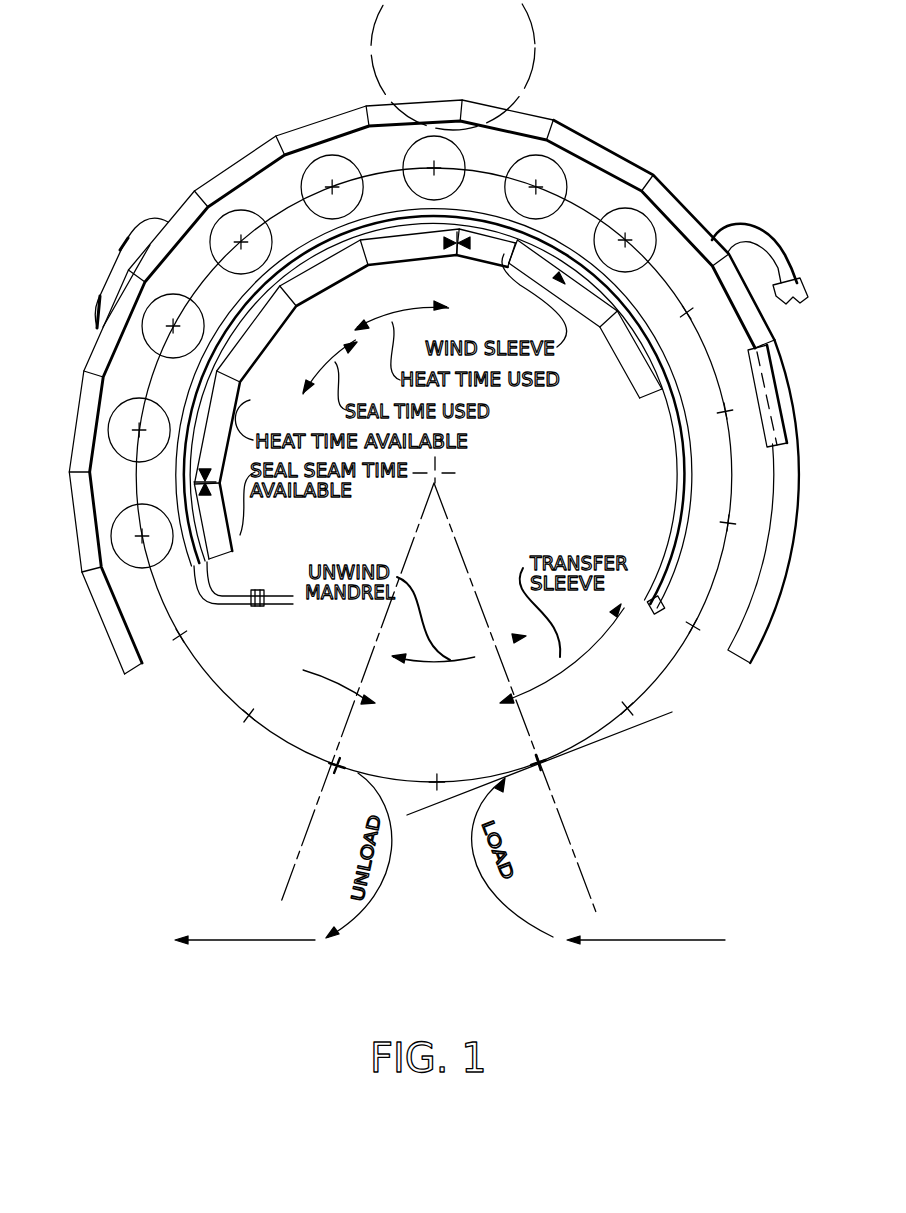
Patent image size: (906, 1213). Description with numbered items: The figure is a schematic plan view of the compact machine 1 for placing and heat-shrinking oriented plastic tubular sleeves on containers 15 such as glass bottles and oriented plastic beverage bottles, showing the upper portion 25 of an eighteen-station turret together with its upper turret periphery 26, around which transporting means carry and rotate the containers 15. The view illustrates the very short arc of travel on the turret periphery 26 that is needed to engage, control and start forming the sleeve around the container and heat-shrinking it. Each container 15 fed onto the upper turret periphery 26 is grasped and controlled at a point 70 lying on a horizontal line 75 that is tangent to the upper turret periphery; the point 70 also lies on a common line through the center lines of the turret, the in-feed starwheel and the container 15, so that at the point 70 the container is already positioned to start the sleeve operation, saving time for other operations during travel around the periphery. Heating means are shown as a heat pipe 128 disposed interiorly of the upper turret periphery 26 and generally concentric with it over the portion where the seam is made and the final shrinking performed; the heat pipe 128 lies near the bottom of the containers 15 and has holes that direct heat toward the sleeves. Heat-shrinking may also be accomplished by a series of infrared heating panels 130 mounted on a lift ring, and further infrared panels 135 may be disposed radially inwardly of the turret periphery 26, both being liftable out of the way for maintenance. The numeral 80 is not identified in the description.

The compact machine 1 is at (199, 179).
The container 15 is at (120, 562).
The upper portion of turret 25 is at (688, 432).
The upper turret periphery 26 is at (672, 662).
The point 70 is at (540, 700).
The horizontal line 75 is at (645, 722).
The unload and load index lines 80 is at (470, 545).
The heat pipe 128 is at (205, 604).
The infrared heating panels 130 is at (126, 254).
The infrared panels 135 is at (428, 394).